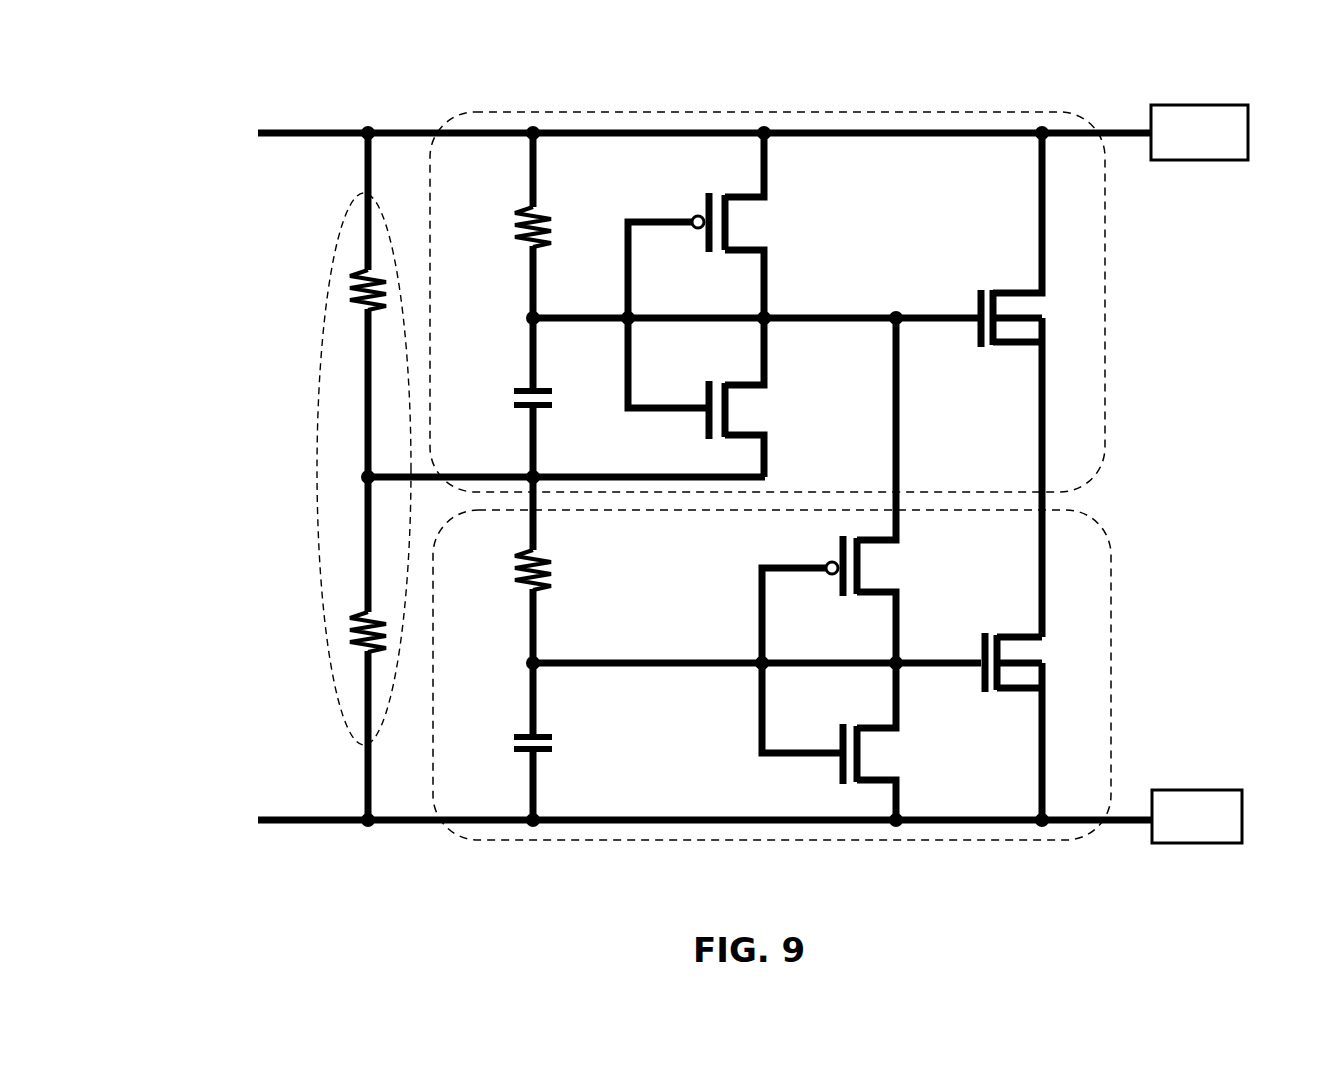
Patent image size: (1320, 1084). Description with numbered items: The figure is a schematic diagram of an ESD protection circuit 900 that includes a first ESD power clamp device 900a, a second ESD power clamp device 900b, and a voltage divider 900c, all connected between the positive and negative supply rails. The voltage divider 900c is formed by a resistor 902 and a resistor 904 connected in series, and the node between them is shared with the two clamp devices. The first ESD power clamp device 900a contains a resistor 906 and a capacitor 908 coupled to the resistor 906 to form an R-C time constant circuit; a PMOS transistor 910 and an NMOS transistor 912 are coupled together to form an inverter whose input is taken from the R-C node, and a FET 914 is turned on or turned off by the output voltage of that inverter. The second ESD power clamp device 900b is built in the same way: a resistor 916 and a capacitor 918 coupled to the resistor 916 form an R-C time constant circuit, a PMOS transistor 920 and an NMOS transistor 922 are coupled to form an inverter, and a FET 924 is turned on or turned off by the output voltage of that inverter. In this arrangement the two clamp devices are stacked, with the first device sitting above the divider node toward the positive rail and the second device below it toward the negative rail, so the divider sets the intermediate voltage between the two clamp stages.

The ESD protection circuit 900 is at (248, 95).
The first ESD power clamp device 900a is at (1108, 266).
The second ESD power clamp device 900b is at (1112, 600).
The voltage divider 900c is at (317, 450).
The resistor 902 is at (340, 286).
The resistor 904 is at (342, 626).
The resistor 906 is at (513, 221).
The capacitor 908 is at (513, 403).
The PMOS transistor 910 is at (705, 215).
The NMOS transistor 912 is at (705, 420).
The FET 914 is at (978, 300).
The resistor 916 is at (512, 581).
The capacitor 918 is at (512, 747).
The PMOS transistor 920 is at (838, 552).
The NMOS transistor 922 is at (838, 767).
The FET 924 is at (980, 645).